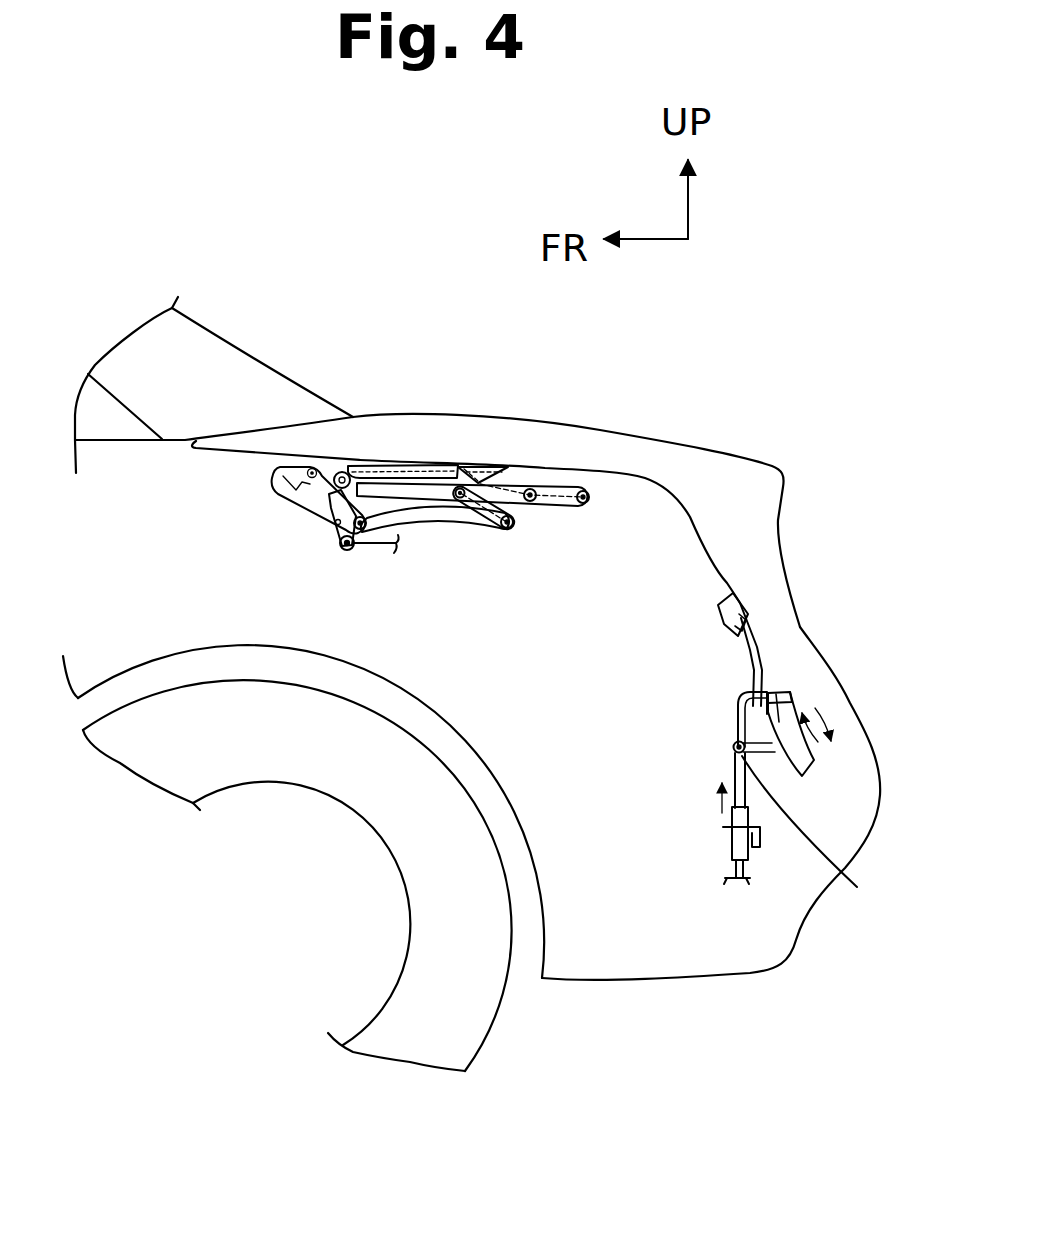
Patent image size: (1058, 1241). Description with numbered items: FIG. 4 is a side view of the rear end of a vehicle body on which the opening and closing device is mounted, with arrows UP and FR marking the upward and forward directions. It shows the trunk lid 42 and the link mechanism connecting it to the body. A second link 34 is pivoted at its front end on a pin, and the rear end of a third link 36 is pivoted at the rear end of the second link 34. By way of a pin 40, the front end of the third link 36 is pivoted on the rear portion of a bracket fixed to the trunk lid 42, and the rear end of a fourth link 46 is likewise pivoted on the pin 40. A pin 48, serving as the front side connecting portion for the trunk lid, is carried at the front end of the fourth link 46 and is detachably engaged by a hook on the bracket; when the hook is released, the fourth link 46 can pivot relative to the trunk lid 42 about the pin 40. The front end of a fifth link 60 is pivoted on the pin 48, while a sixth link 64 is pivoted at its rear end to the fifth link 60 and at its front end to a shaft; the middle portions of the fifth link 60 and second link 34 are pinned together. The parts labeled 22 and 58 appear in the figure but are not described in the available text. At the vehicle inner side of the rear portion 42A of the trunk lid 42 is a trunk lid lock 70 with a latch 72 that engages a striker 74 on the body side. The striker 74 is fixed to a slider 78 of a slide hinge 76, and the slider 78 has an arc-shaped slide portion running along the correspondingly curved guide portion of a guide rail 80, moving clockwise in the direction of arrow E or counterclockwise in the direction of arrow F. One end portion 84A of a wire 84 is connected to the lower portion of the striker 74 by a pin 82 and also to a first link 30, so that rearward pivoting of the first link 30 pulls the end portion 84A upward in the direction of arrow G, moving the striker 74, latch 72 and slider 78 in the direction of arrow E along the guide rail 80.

The hinge base bracket 22 is at (330, 500).
The first link 30 is at (335, 513).
The second link 34 is at (557, 503).
The third link 36 is at (556, 474).
The pin 40 is at (481, 478).
The trunk lid 42 is at (604, 426).
The rear portion of the trunk lid 42A is at (782, 532).
The fourth link 46 is at (422, 465).
The pin 48 is at (346, 472).
The bracket 58 is at (384, 546).
The fifth link 60 is at (517, 512).
The sixth link 64 is at (447, 519).
The trunk lid lock 70 is at (720, 625).
The latch 72 is at (752, 672).
The striker 74 is at (735, 718).
The slide hinge 76 is at (792, 698).
The slider 78 is at (795, 780).
The guide rail 80 is at (790, 682).
The pin 82 is at (732, 747).
The wire 84 is at (733, 773).
The end portion of the wire 84A is at (826, 844).
The arrow E is at (822, 742).
The arrow F is at (820, 728).
The arrow G is at (718, 808).